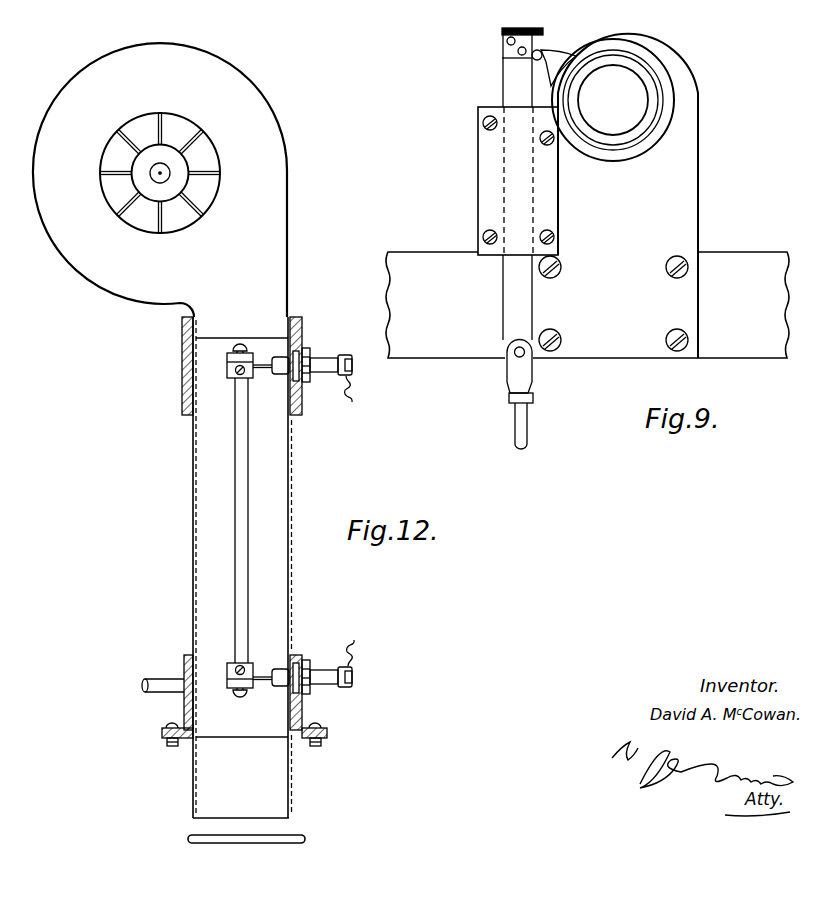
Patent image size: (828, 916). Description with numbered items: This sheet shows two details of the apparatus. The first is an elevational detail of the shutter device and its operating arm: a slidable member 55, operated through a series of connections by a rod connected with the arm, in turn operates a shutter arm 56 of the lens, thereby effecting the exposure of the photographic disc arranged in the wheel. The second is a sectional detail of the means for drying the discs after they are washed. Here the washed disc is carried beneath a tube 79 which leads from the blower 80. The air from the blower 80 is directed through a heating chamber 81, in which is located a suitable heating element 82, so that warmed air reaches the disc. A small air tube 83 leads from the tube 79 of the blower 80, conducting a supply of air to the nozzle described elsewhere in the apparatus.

In FIG. 9, the slidable member 55 is at (533, 300).
In FIG. 9, the shutter arm 56 is at (553, 52).
In FIG. 12, the tube 79 is at (192, 633).
In FIG. 12, the blower 80 is at (275, 203).
In FIG. 12, the heating chamber 81 is at (281, 492).
In FIG. 12, the heating element 82 is at (245, 507).
In FIG. 12, the small air tube 83 is at (152, 694).